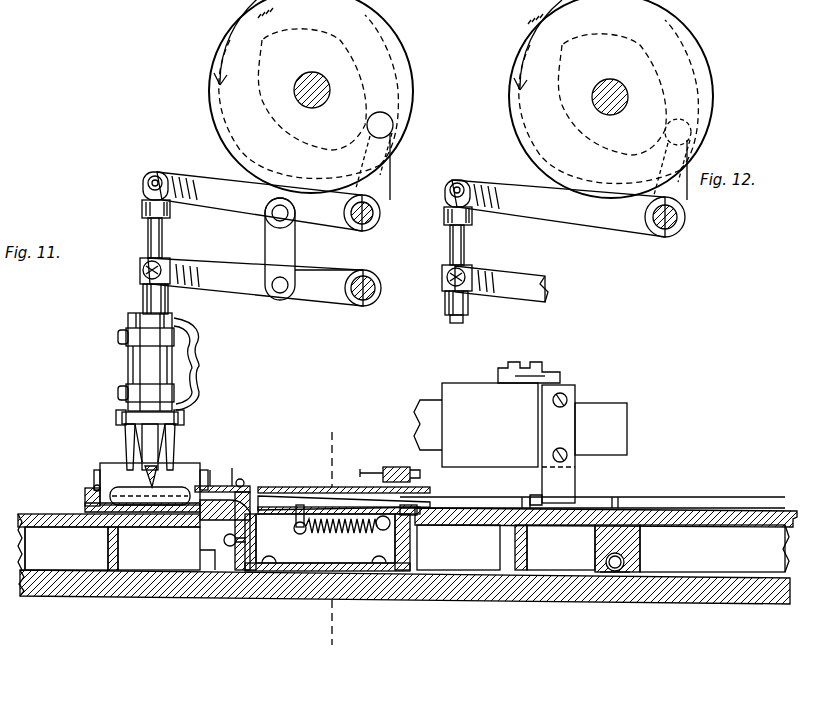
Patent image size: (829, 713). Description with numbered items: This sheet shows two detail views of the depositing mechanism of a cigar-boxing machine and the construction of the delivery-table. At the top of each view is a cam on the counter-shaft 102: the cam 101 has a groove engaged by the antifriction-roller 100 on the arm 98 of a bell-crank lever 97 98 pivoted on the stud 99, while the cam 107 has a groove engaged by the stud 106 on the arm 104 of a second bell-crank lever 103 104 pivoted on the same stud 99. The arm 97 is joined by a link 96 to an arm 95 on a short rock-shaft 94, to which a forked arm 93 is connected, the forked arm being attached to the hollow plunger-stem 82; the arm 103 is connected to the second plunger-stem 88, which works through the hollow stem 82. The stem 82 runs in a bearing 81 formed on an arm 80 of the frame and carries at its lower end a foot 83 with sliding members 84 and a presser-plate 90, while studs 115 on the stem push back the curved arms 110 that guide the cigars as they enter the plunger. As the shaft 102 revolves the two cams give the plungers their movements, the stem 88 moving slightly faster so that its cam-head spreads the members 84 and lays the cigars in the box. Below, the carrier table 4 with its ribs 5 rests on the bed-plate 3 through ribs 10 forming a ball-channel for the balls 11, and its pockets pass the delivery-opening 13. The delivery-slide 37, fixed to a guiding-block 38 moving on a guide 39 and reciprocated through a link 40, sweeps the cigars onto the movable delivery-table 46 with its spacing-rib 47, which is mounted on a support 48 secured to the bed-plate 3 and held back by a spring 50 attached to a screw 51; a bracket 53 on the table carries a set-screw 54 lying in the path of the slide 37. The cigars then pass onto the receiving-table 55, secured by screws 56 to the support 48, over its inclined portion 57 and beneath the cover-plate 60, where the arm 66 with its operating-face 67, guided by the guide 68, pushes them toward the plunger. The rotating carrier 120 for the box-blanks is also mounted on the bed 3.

In FIG. 11, the bed-plate 3 is at (232, 600).
In FIG. 11, the table 4 is at (730, 508).
In FIG. 11, the ribs 5 is at (606, 497).
In FIG. 11, the ribs 10 is at (626, 560).
In FIG. 11, the balls 11 is at (616, 575).
In FIG. 11, the delivery-opening 13 is at (334, 541).
In FIG. 11, the delivery-slide 37 is at (552, 445).
In FIG. 11, the guiding-block 38 is at (476, 425).
In FIG. 11, the guide 39 is at (601, 429).
In FIG. 11, the link 40 is at (548, 372).
In FIG. 11, the delivery-table 46 is at (426, 492).
In FIG. 11, the spacing-rib 47 is at (312, 496).
In FIG. 11, the support 48 is at (327, 542).
In FIG. 11, the spring 50 is at (360, 535).
In FIG. 11, the screw 51 is at (296, 527).
In FIG. 11, the bracket 53 is at (398, 458).
In FIG. 11, the set-screw 54 is at (418, 466).
In FIG. 11, the receiving-table 55 is at (85, 508).
In FIG. 11, the screws 56 is at (224, 540).
In FIG. 11, the inclined portion 57 is at (246, 472).
In FIG. 11, the cover-plate 60 is at (228, 458).
In FIG. 11, the arm 66 is at (157, 470).
In FIG. 11, the operating-face 67 is at (158, 522).
In FIG. 11, the guide 68 is at (85, 490).
In FIG. 11, the arm 80 is at (197, 362).
In FIG. 11, the bearing 81 is at (128, 360).
In FIG. 11, the plunger-stem 82 is at (141, 298).
In FIG. 12, the plunger-stem 82 is at (468, 306).
In FIG. 11, the foot 83 is at (97, 470).
In FIG. 11, the sliding members 84 is at (94, 478).
In FIG. 11, the plunger-stem 88 is at (163, 238).
In FIG. 12, the plunger-stem 88 is at (465, 246).
In FIG. 11, the presser-plate 90 is at (150, 484).
In FIG. 11, the forked arm 93 is at (255, 282).
In FIG. 12, the forked arm 93 is at (501, 284).
In FIG. 11, the rock-shaft 94 is at (380, 283).
In FIG. 11, the arm 95 is at (332, 275).
In FIG. 11, the link 96 is at (280, 249).
In FIG. 11, the bell-crank lever arm 97 is at (298, 213).
In FIG. 11, the bell-crank lever arm 98 is at (390, 185).
In FIG. 11, the stud 99 is at (380, 213).
In FIG. 12, the stud 99 is at (670, 230).
In FIG. 11, the antifriction-roller 100 is at (393, 123).
In FIG. 11, the cam 101 is at (414, 80).
In FIG. 11, the counter-shaft 102 is at (314, 108).
In FIG. 12, the counter-shaft 102 is at (614, 115).
In FIG. 11, the bell-crank lever arm 103 is at (259, 201).
In FIG. 12, the bell-crank lever arm 103 is at (600, 222).
In FIG. 12, the bell-crank lever arm 104 is at (687, 190).
In FIG. 12, the stud 106 is at (691, 130).
In FIG. 12, the cam 107 is at (712, 72).
In FIG. 11, the curved arms 110 is at (188, 438).
In FIG. 11, the studs 115 is at (192, 412).
In FIG. 11, the rotating carrier 120 is at (109, 542).